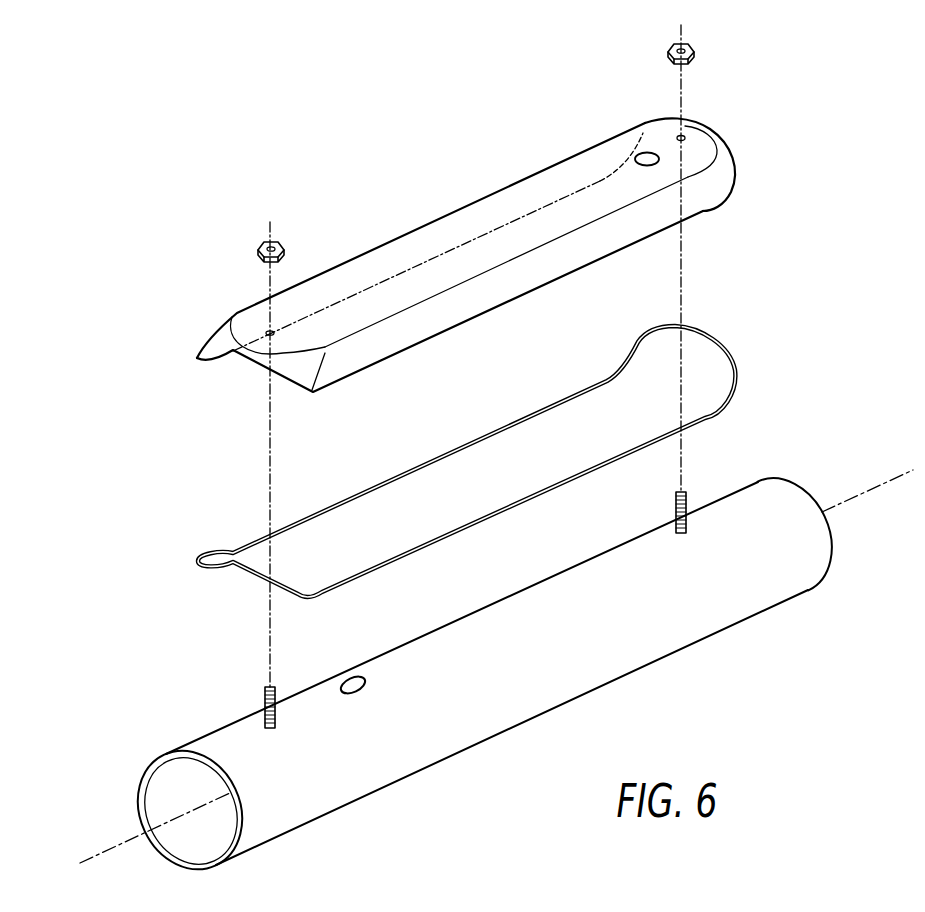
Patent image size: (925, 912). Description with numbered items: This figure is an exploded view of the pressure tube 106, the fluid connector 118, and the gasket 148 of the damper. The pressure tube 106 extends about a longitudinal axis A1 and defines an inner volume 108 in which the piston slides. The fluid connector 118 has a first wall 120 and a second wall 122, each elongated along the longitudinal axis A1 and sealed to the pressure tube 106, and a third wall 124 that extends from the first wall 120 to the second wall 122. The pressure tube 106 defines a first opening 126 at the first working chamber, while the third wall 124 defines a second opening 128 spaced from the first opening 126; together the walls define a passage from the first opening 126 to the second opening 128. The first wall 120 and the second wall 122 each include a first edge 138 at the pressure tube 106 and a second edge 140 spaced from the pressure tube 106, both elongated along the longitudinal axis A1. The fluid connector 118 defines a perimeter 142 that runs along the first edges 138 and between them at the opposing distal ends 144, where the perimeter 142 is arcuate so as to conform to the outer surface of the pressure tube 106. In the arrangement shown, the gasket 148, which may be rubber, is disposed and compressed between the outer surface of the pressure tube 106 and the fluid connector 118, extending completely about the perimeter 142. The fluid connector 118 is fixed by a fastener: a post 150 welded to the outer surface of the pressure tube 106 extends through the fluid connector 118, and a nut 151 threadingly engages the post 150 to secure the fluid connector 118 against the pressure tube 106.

The pressure tube 106 is at (665, 610).
The inner volume 108 is at (182, 792).
The fluid connector 118 is at (388, 250).
The first wall 120 is at (583, 170).
The second wall 122 is at (697, 190).
The third wall 124 is at (540, 187).
The first opening 126 is at (352, 673).
The second opening 128 is at (641, 152).
The first edge 138 is at (453, 247).
The second edge 140 is at (335, 268).
The perimeter 142 is at (481, 216).
The distal ends 144 is at (728, 140).
The gasket 148 is at (731, 336).
The post 150 is at (688, 495).
The nut 151 is at (696, 47).
The longitudinal axis A1 is at (850, 498).